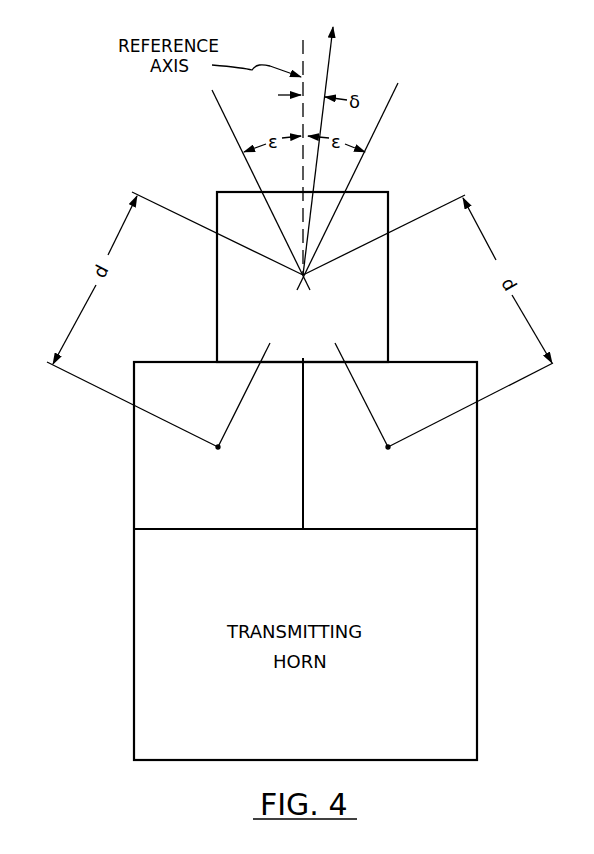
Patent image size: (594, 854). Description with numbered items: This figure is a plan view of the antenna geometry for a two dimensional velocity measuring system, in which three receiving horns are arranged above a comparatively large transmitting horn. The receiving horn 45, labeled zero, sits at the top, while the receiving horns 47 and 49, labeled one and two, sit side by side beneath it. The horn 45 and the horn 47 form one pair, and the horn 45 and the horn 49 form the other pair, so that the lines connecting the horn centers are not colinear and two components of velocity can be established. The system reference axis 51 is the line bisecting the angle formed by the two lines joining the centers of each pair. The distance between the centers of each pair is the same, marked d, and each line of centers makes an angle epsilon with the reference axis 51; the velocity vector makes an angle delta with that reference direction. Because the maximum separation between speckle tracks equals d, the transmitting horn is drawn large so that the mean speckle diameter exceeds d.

The receiving horn 45 is at (217, 313).
The receiving horn 47 is at (134, 490).
The receiving horn 49 is at (477, 479).
The system reference axis 51 is at (303, 62).